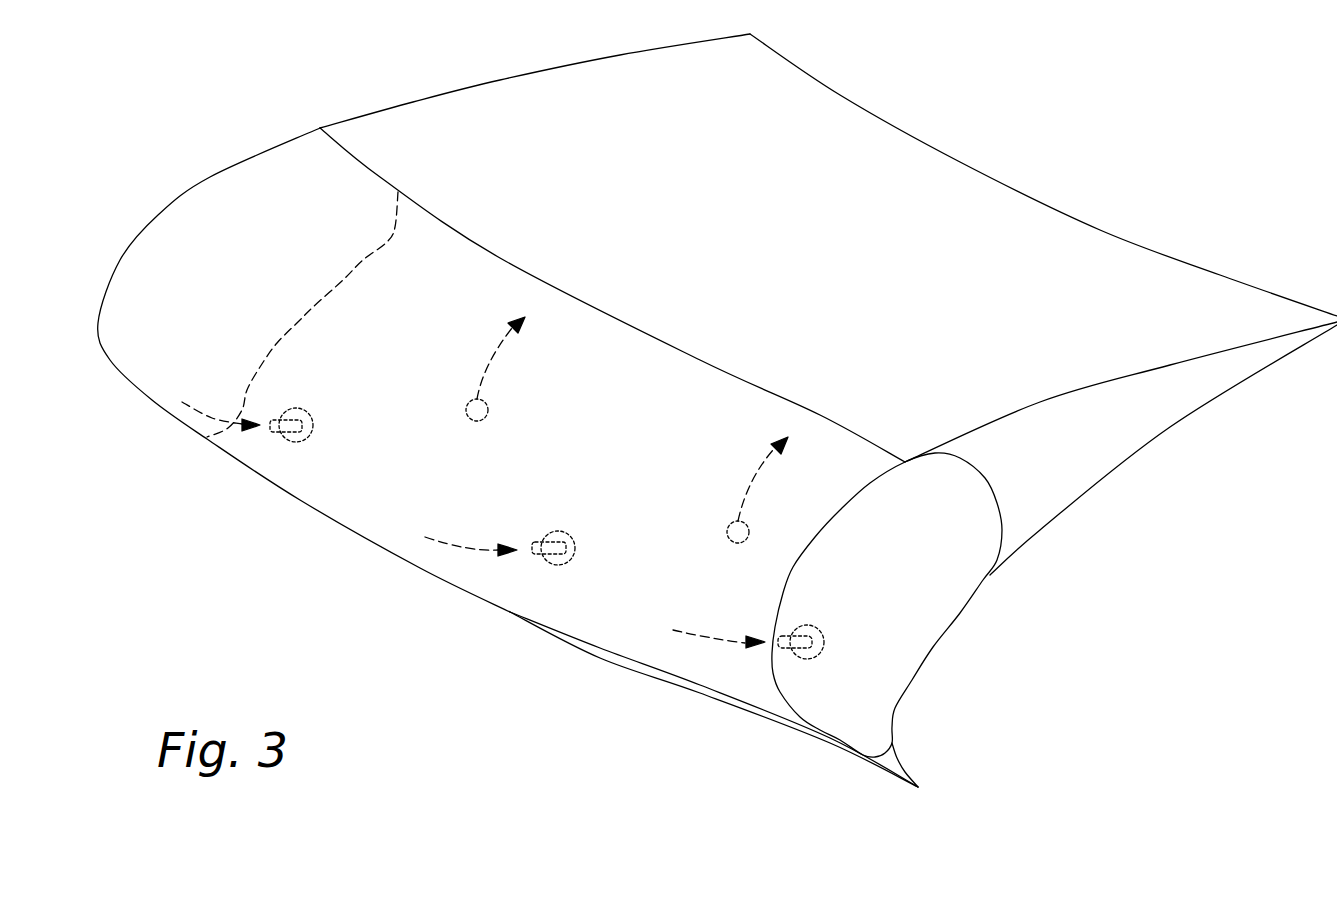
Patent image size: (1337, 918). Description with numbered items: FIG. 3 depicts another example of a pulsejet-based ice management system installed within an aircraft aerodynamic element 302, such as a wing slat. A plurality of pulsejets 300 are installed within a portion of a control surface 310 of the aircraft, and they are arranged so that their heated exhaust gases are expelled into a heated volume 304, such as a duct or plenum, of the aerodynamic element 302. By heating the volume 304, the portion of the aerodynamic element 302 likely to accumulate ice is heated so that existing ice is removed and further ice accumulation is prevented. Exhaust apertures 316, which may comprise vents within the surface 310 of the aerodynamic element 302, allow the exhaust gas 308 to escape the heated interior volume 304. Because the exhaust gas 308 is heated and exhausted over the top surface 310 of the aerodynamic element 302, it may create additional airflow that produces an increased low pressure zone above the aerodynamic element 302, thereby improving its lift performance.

The pulsejets 300 is at (298, 412).
The aerodynamic element 302 is at (980, 187).
The heated volume 304 is at (905, 560).
The exhaust gas 308 is at (498, 356).
The control surface 310 is at (167, 228).
The exhaust apertures 316 is at (472, 409).